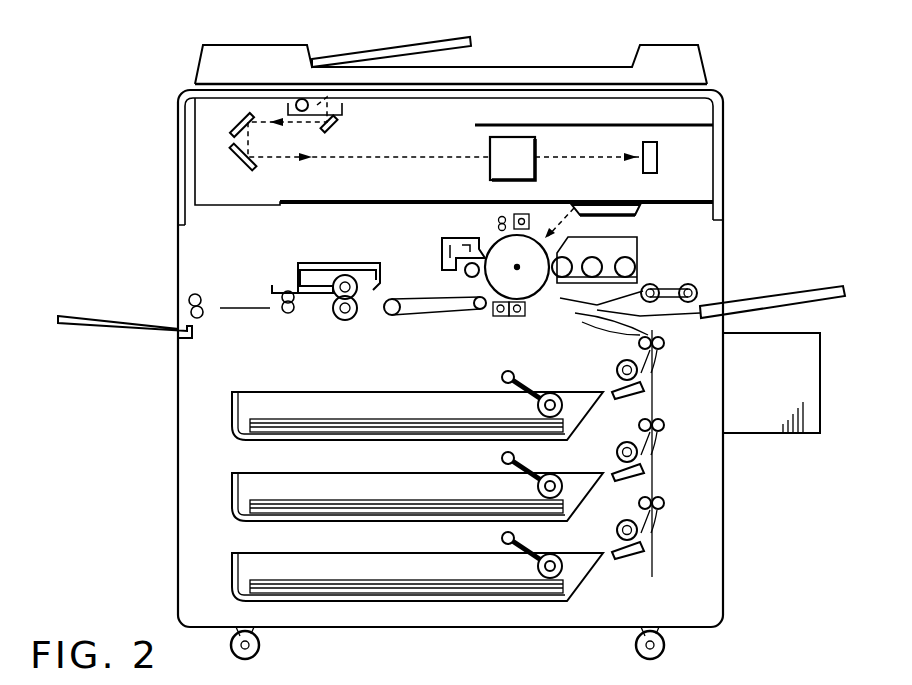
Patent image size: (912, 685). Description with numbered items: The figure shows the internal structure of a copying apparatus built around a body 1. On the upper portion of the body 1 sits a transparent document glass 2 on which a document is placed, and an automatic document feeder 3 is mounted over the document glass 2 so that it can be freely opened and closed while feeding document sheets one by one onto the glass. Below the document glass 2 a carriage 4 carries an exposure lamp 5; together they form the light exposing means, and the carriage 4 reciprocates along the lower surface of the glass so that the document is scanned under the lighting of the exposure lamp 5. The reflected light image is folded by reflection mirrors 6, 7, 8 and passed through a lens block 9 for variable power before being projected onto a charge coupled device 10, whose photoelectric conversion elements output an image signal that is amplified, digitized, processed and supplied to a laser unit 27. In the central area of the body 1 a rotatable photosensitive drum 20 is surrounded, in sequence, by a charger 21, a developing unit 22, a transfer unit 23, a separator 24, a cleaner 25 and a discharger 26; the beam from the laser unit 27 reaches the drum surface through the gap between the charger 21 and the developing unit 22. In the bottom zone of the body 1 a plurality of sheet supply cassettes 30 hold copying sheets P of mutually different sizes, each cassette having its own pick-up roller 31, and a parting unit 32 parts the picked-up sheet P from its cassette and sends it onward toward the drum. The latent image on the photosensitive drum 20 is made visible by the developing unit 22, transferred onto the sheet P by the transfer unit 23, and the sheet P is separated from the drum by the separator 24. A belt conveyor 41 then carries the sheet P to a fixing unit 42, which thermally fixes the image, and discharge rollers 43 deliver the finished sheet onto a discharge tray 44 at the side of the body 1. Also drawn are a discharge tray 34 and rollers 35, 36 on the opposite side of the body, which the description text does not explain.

The body 1 is at (725, 165).
The document glass 2 is at (470, 98).
The automatic document feeder 3 is at (565, 67).
The carriage 4 is at (342, 112).
The exposure lamp 5 is at (300, 100).
The reflection mirror 6 is at (336, 128).
The reflection mirror 7 is at (233, 122).
The reflection mirror 8 is at (236, 160).
The lens block 9 is at (536, 140).
The charge coupled device 10 is at (657, 165).
The photosensitive drum 20 is at (495, 246).
The charger 21 is at (528, 215).
The developing unit 22 is at (630, 240).
The transfer unit 23 is at (517, 316).
The separator 24 is at (497, 316).
The cleaner 25 is at (443, 246).
The discharger 26 is at (500, 218).
The laser unit 27 is at (640, 208).
The sheet supply cassette 30 is at (232, 410).
The pick-up roller 31 is at (561, 393).
The parting unit 32 is at (625, 360).
The discharge tray 34 is at (818, 289).
The discharge roller 35 is at (690, 284).
The discharge roller 36 is at (652, 284).
The belt conveyor 41 is at (410, 298).
The fixing unit 42 is at (335, 263).
The discharge rollers 43 is at (198, 293).
The discharge tray 44 is at (133, 334).
The copying sheet P is at (368, 419).